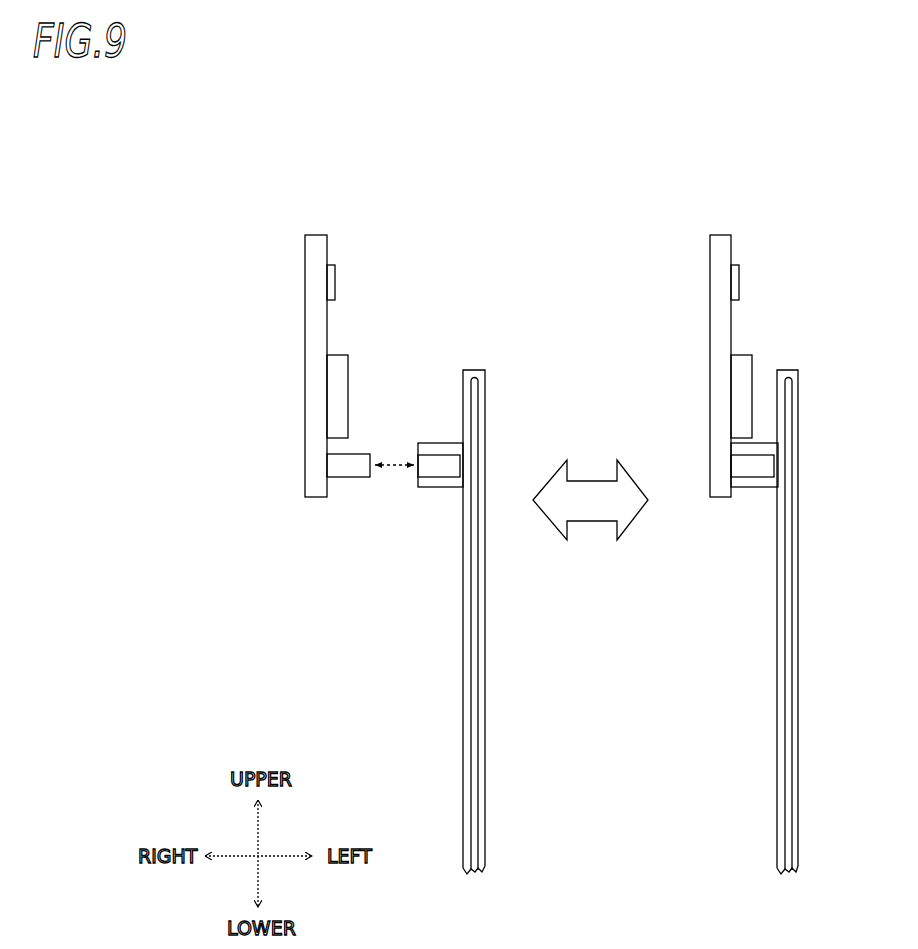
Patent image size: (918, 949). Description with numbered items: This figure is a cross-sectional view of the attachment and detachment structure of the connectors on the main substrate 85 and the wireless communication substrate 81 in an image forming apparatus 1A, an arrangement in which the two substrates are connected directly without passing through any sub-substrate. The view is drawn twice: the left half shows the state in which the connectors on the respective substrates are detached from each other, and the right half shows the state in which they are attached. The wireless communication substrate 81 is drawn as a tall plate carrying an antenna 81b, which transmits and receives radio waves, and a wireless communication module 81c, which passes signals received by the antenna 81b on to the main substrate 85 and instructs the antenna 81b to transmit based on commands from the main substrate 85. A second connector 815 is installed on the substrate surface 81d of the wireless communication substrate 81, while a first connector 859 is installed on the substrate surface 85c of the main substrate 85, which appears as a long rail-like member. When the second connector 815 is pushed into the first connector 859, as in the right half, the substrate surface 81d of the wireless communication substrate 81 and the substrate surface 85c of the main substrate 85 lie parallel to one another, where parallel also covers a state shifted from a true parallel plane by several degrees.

The image forming apparatus 1A is at (470, 223).
The wireless communication substrate 81 is at (318, 235).
The antenna 81b is at (328, 281).
The wireless communication module 81c is at (340, 398).
The substrate surface 81d is at (327, 258).
The second connector 815 is at (350, 478).
The first connector 859 is at (440, 449).
The main substrate 85 is at (485, 633).
The substrate surface 85c is at (463, 570).